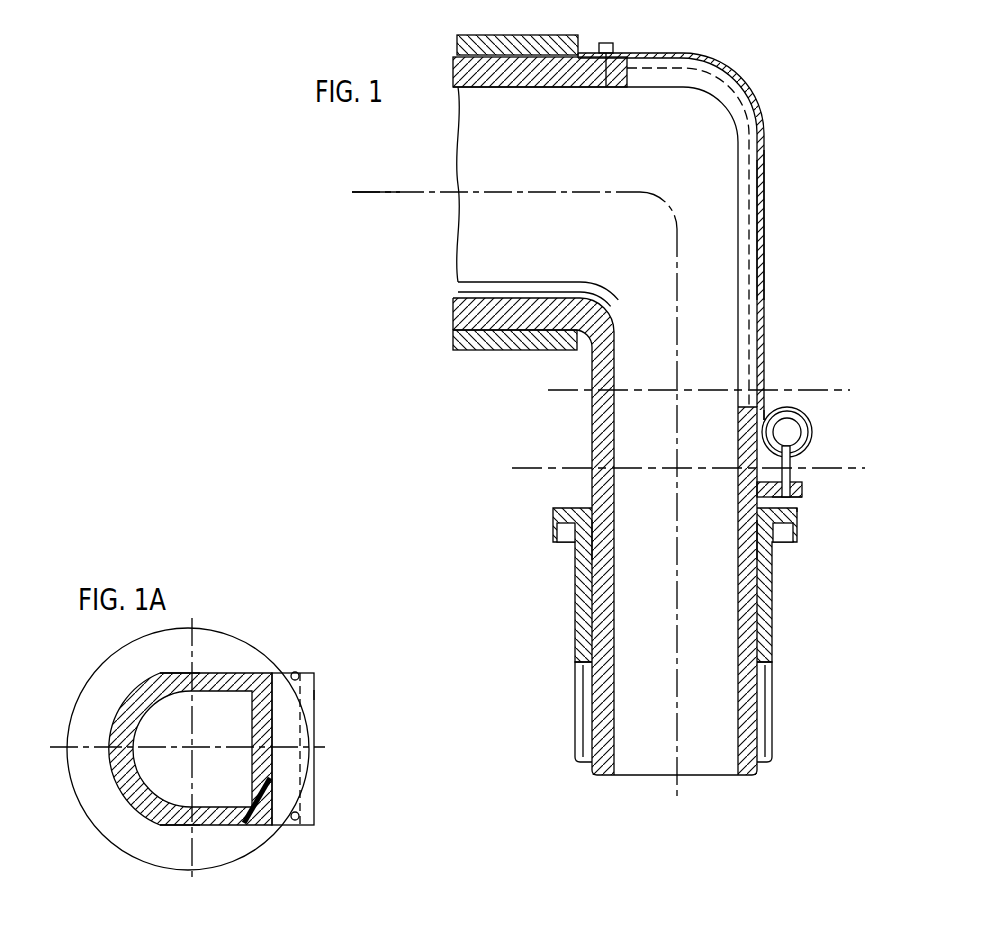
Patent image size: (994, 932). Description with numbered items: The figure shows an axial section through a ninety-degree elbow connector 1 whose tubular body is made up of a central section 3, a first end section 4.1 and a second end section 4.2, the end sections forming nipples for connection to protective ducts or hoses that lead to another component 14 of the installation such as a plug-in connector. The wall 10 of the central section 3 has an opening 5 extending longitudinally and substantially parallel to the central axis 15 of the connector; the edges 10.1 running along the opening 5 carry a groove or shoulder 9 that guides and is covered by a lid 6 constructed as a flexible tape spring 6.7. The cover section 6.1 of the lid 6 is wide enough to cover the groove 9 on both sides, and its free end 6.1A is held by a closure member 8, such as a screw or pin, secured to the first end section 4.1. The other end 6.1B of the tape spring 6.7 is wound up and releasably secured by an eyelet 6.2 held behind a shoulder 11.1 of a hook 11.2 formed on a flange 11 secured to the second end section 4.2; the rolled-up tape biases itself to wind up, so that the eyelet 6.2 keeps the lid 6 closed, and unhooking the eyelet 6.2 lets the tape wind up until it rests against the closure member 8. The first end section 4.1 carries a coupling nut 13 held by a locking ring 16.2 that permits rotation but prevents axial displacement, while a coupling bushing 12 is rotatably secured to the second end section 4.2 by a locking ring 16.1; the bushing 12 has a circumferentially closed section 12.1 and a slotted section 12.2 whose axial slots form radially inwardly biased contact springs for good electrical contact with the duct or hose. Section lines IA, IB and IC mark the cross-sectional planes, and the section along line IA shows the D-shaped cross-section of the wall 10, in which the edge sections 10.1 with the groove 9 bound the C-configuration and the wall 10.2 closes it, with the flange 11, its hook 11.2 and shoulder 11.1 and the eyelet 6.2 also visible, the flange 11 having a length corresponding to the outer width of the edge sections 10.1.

In FIG. 1, the elbow connector 1 is at (750, 65).
In FIG. 1, the central section 3 is at (720, 255).
In FIG. 1A, the central section 3 is at (108, 785).
In FIG. 1, the first end section 4.1 is at (517, 150).
In FIG. 1, the second end section 4.2 is at (722, 586).
In FIG. 1A, the second end section 4.2 is at (233, 788).
In FIG. 1, the opening 5 is at (752, 178).
In FIG. 1, the lid 6 is at (782, 198).
In FIG. 1, the cover section 6.1 is at (766, 134).
In FIG. 1, the free end 6.1A is at (585, 50).
In FIG. 1, the other end 6.1B is at (775, 412).
In FIG. 1, the eyelet 6.2 is at (792, 471).
In FIG. 1A, the eyelet 6.2 is at (294, 672).
In FIG. 1, the tape spring 6.7 is at (811, 427).
In FIG. 1, the closure member 8 is at (613, 49).
In FIG. 1, the groove or shoulder 9 is at (752, 226).
In FIG. 1, the wall 10 is at (617, 432).
In FIG. 1A, the wall 10 is at (137, 694).
In FIG. 1A, the edges 10.1 is at (232, 672).
In FIG. 1A, the wall 10.2 is at (272, 778).
In FIG. 1, the flange 11 is at (806, 492).
In FIG. 1A, the flange 11 is at (320, 735).
In FIG. 1, the shoulder 11.1 is at (797, 504).
In FIG. 1A, the shoulder 11.1 is at (293, 695).
In FIG. 1, the hook 11.2 is at (800, 498).
In FIG. 1A, the hook 11.2 is at (310, 716).
In FIG. 1, the coupling bushing 12 is at (573, 611).
In FIG. 1, the circumferentially closed section 12.1 is at (765, 607).
In FIG. 1, the slotted section 12.2 is at (765, 722).
In FIG. 1, the coupling nut 13 is at (560, 36).
In FIG. 1, the component 14 is at (366, 179).
In FIG. 1, the central axis 15 is at (533, 194).
In FIG. 1, the locking ring 16.1 is at (590, 535).
In FIG. 1, the locking ring 16.2 is at (487, 25).
In FIG. 1, the section line IA— IA is at (521, 468).
In FIG. 1, the section line IB— IB is at (556, 365).
In FIG. 1, the section line IC— IC is at (773, 243).